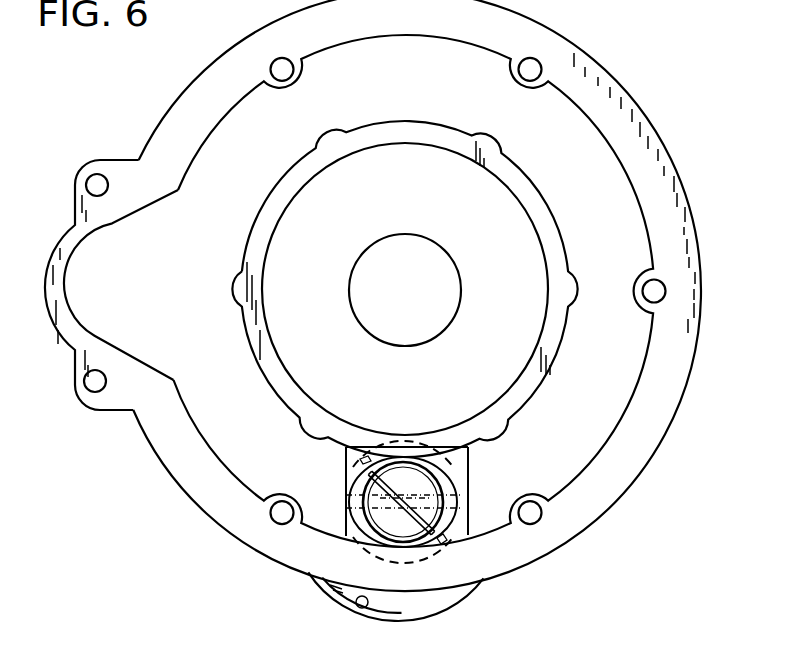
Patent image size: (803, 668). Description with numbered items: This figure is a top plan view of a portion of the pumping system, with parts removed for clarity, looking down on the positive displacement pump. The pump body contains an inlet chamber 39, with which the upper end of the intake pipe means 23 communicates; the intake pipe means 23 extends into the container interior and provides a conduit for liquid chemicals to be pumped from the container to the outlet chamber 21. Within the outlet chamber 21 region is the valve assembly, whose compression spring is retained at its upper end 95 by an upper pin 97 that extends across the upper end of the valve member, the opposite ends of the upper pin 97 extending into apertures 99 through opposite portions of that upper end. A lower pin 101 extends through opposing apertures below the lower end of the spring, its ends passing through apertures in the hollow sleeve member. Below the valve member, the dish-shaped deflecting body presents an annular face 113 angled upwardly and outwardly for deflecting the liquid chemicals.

The outlet chamber 21 is at (610, 388).
The intake pipe means 23 is at (428, 241).
The inlet chamber 39 is at (517, 270).
The upper end of spring means 95 is at (440, 462).
The upper pin 97 is at (441, 491).
The apertures 99 is at (440, 553).
The lower pin 101 is at (373, 533).
The annular face 113 is at (413, 600).